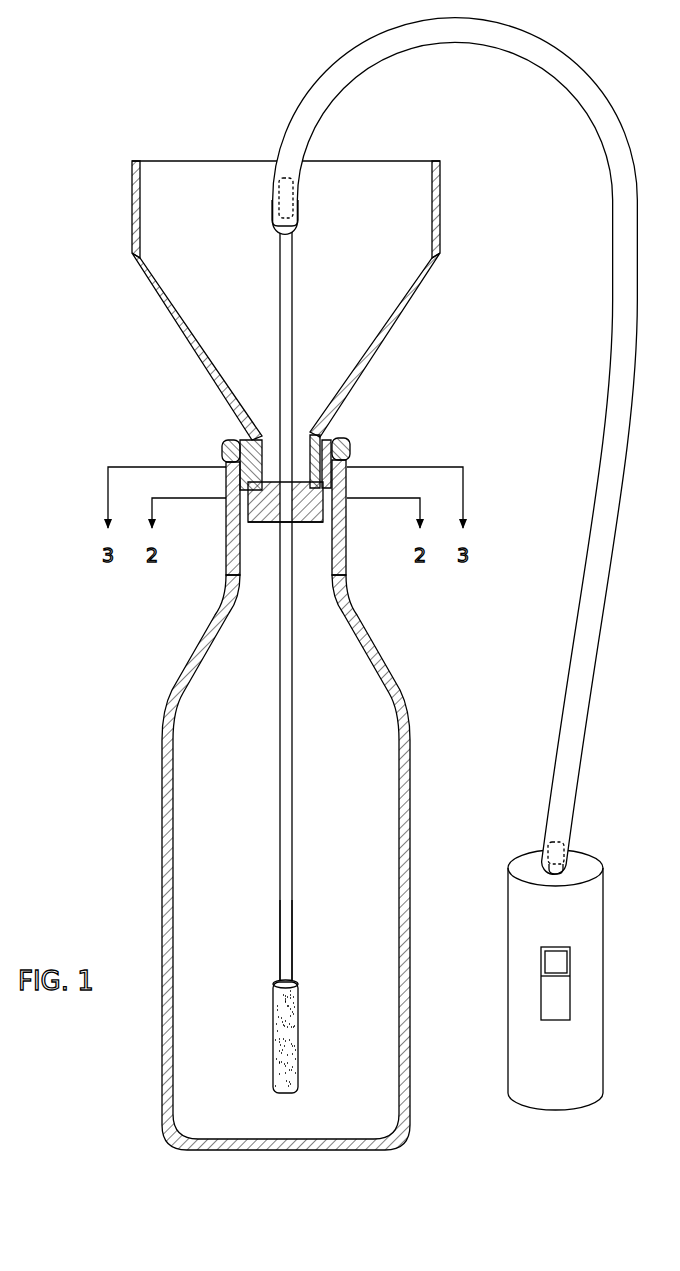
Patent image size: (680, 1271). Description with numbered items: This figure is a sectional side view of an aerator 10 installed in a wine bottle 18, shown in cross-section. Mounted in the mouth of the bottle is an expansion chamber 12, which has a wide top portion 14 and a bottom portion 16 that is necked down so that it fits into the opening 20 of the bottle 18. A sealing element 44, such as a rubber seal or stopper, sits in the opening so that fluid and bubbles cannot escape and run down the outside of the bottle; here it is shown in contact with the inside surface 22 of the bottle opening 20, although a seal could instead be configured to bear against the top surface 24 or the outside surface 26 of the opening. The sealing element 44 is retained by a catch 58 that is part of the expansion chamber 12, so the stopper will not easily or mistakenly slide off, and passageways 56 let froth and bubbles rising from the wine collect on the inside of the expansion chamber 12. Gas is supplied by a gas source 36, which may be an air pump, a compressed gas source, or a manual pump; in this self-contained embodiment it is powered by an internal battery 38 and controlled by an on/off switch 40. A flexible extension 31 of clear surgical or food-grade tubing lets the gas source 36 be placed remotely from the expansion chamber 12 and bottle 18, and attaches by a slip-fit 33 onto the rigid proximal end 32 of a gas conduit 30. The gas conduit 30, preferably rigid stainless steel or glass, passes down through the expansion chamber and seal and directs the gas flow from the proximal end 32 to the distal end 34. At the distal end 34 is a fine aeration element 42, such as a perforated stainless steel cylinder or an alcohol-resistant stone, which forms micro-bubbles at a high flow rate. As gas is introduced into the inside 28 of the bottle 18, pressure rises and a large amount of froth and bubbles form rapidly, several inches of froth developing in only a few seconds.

The aerator 10 is at (116, 70).
The expansion chamber 12 is at (260, 346).
The top portion 14 is at (246, 209).
The bottom portion 16 is at (266, 416).
The wine bottle 18 is at (310, 862).
The opening 20 is at (359, 443).
The inside surface 22 is at (353, 432).
The top surface 24 is at (315, 441).
The outside surface 26 is at (380, 507).
The inside 28 is at (324, 857).
The gas conduit 30 is at (395, 731).
The flexible extension 31 is at (621, 377).
The proximal end 32 is at (364, 304).
The slip-fit 33 is at (455, 493).
The distal end 34 is at (196, 932).
The gas source 36 is at (584, 971).
The internal battery 38 is at (584, 1073).
The on/off switch 40 is at (600, 983).
The aeration element 42 is at (202, 1036).
The sealing element 44 is at (190, 527).
The passageways 56 is at (330, 566).
The catch 58 is at (327, 495).